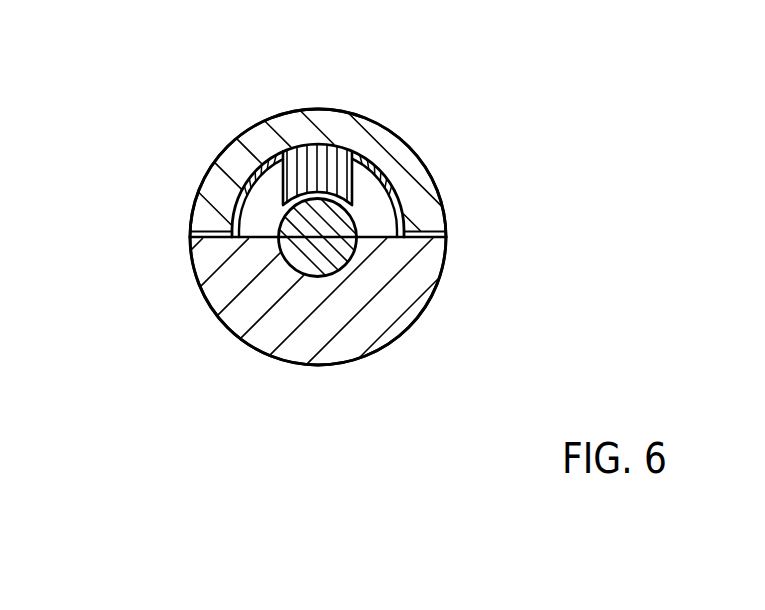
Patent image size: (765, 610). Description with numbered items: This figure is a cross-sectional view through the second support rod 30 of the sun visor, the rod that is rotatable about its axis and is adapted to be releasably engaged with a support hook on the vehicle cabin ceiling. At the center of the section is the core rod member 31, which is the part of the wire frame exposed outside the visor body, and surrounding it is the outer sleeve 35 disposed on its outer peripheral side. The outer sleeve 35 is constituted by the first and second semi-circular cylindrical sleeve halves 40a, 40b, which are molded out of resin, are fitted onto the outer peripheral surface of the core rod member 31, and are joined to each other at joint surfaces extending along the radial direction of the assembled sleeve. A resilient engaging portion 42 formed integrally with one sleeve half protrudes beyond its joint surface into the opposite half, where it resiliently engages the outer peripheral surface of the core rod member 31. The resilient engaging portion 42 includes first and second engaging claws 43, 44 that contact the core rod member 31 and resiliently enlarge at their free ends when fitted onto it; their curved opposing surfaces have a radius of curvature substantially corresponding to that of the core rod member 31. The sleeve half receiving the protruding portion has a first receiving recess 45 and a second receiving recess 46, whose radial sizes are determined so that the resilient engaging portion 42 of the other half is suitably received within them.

The second support rod 30 is at (97, 197).
The core rod member 31 is at (295, 248).
The outer sleeve 35 is at (182, 219).
The first semi-circular cylindrical sleeve half 40a is at (348, 342).
The second semi-circular cylindrical sleeve half 40b is at (385, 138).
The resilient engaging portion 42 is at (357, 48).
The first engaging claw 43 is at (274, 185).
The second engaging claw 44 is at (338, 148).
The first receiving recess 45 is at (405, 198).
The second receiving recess 46 is at (383, 206).